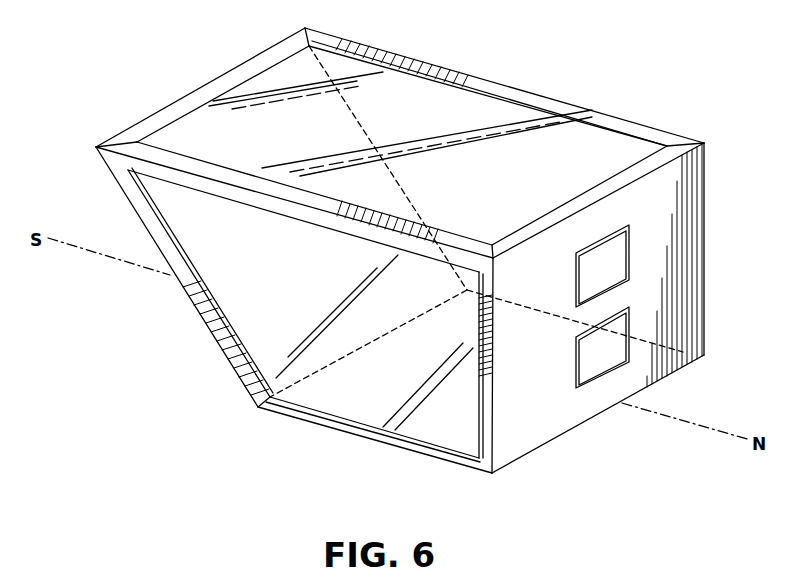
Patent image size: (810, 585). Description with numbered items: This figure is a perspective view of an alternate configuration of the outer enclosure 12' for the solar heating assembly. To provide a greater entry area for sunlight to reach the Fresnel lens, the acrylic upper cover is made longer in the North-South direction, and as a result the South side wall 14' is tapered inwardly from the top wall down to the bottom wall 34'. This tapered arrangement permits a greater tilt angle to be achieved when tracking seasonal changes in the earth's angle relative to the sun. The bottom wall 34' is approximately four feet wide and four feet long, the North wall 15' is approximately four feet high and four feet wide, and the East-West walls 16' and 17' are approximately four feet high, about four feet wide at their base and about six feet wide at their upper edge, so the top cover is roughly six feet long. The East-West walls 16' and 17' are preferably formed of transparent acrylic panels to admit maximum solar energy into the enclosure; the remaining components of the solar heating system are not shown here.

The outer enclosure 12' is at (183, 296).
The South side wall 14' is at (179, 282).
The North wall 15' is at (642, 308).
The East-West wall 16' is at (310, 323).
The East-West wall 17' is at (400, 134).
The bottom wall 34' is at (375, 397).